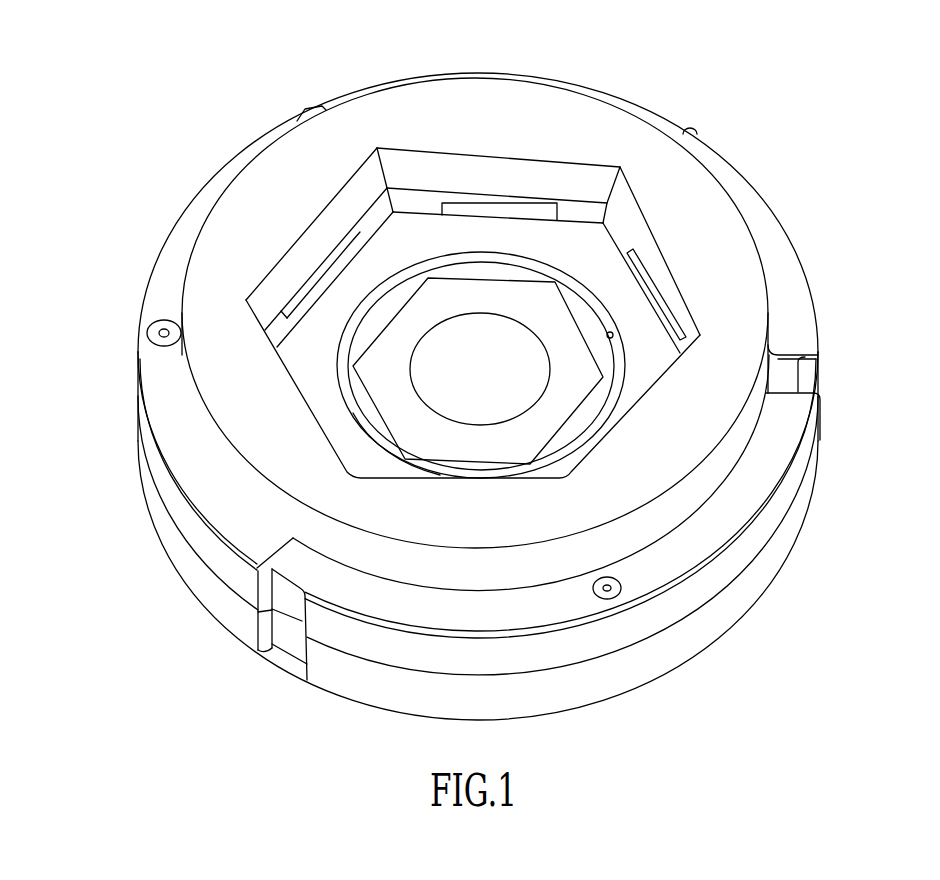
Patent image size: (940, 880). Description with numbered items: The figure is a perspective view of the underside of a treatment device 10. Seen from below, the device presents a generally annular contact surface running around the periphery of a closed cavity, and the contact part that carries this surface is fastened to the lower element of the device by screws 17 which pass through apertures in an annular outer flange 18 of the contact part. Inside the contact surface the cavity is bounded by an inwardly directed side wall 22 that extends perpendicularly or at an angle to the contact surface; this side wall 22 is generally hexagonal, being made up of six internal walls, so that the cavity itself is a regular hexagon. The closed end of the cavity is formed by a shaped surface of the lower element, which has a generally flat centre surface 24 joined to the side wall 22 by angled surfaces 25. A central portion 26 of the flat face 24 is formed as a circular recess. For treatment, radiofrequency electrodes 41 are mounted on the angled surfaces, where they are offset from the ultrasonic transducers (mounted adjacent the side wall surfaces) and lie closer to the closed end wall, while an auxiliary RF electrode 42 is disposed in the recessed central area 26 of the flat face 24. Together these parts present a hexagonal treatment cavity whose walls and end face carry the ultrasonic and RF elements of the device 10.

The treatment device 10 is at (832, 318).
The screws 17 is at (614, 588).
The annular outer flange 18 is at (383, 597).
The side wall 22 is at (380, 175).
The flat centre surface 24 is at (467, 228).
The angled surfaces 25 is at (593, 213).
The central portion 26 is at (585, 325).
The radiofrequency (RF) electrodes 41 is at (353, 277).
The auxiliary RF electrode 42 is at (563, 390).